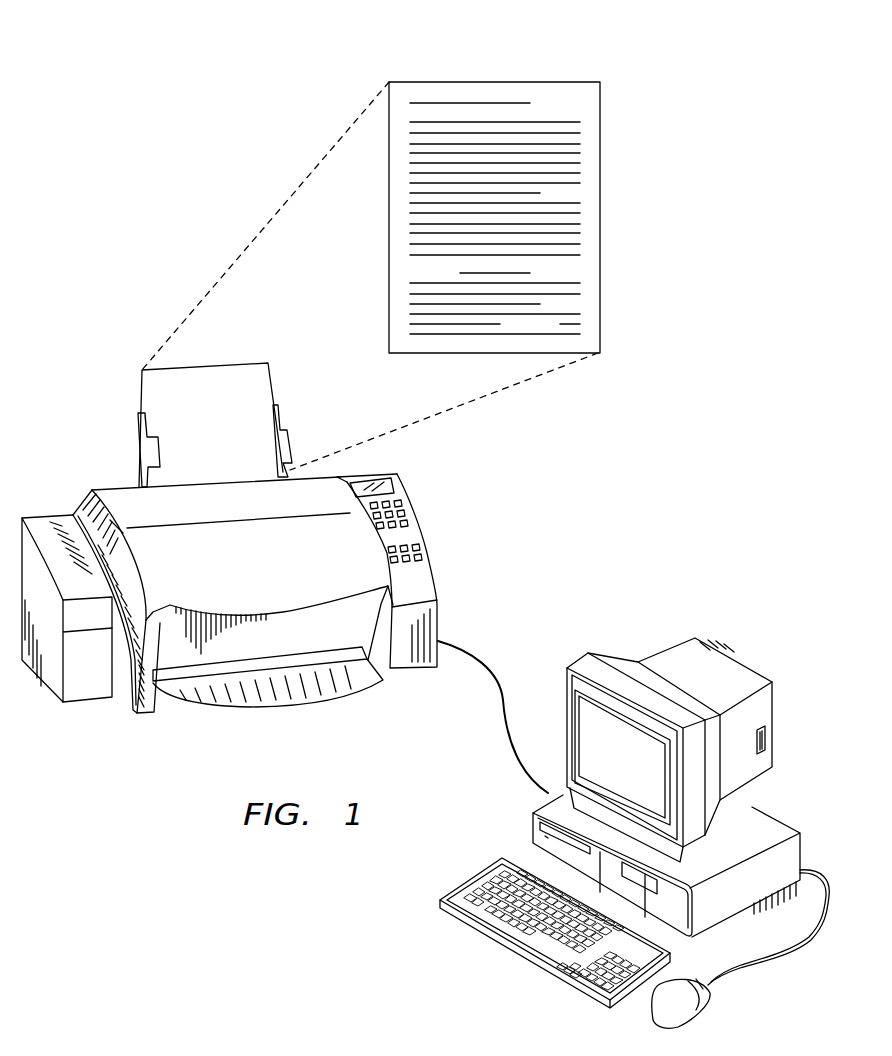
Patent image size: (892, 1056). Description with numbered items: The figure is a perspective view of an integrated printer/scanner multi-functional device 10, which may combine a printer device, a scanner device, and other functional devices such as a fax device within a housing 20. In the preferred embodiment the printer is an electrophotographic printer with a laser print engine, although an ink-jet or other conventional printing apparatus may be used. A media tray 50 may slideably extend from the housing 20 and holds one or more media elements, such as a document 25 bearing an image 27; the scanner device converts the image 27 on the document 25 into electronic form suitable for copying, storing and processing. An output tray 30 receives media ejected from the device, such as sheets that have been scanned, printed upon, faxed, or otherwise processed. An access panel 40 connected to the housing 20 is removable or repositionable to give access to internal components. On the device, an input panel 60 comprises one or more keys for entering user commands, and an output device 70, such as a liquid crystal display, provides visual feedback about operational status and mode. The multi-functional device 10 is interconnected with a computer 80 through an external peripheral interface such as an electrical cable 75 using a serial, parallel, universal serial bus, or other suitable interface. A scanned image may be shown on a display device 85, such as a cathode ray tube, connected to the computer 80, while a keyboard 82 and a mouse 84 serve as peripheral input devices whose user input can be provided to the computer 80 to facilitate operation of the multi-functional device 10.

The multi-functional device 10 is at (77, 354).
The housing 20 is at (97, 688).
The document 25 is at (494, 82).
The image 27 is at (594, 268).
The output tray 30 is at (248, 700).
The access panel 40 is at (125, 497).
The media tray 50 is at (138, 430).
The input panel 60 is at (408, 540).
The output device 70 is at (398, 480).
The electrical cable 75 is at (488, 660).
The computer 80 is at (774, 822).
The keyboard 82 is at (522, 958).
The mouse 84 is at (693, 1003).
The display device 85 is at (642, 773).